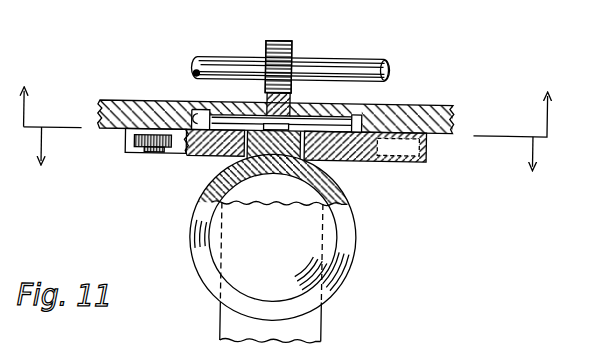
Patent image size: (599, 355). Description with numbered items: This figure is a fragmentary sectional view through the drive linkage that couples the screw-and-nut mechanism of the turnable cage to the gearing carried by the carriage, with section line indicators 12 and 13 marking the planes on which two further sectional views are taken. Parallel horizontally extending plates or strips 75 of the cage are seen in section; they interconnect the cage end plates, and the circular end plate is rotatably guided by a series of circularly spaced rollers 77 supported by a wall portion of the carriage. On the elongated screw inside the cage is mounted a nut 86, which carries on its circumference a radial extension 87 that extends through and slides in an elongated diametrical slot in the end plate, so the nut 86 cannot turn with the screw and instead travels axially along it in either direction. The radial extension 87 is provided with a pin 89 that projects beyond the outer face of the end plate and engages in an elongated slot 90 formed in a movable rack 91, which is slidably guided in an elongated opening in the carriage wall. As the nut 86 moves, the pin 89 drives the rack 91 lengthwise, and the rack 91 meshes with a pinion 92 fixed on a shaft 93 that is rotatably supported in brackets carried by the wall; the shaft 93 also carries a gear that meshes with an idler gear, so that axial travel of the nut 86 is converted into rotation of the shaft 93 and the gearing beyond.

The section line for Fig. 12 is at (286, 166).
The section line for Fig. 13 is at (286, 97).
The horizontally extending plates or strips 75 is at (328, 316).
The circularly spaced rollers 77 is at (152, 151).
The nut 86 is at (337, 173).
The radial extension 87 is at (226, 158).
The pin 89 is at (296, 107).
The elongated slot 90 is at (208, 106).
The movable rack 91 is at (266, 97).
The pinion 92 is at (296, 27).
The shaft 93 is at (355, 48).